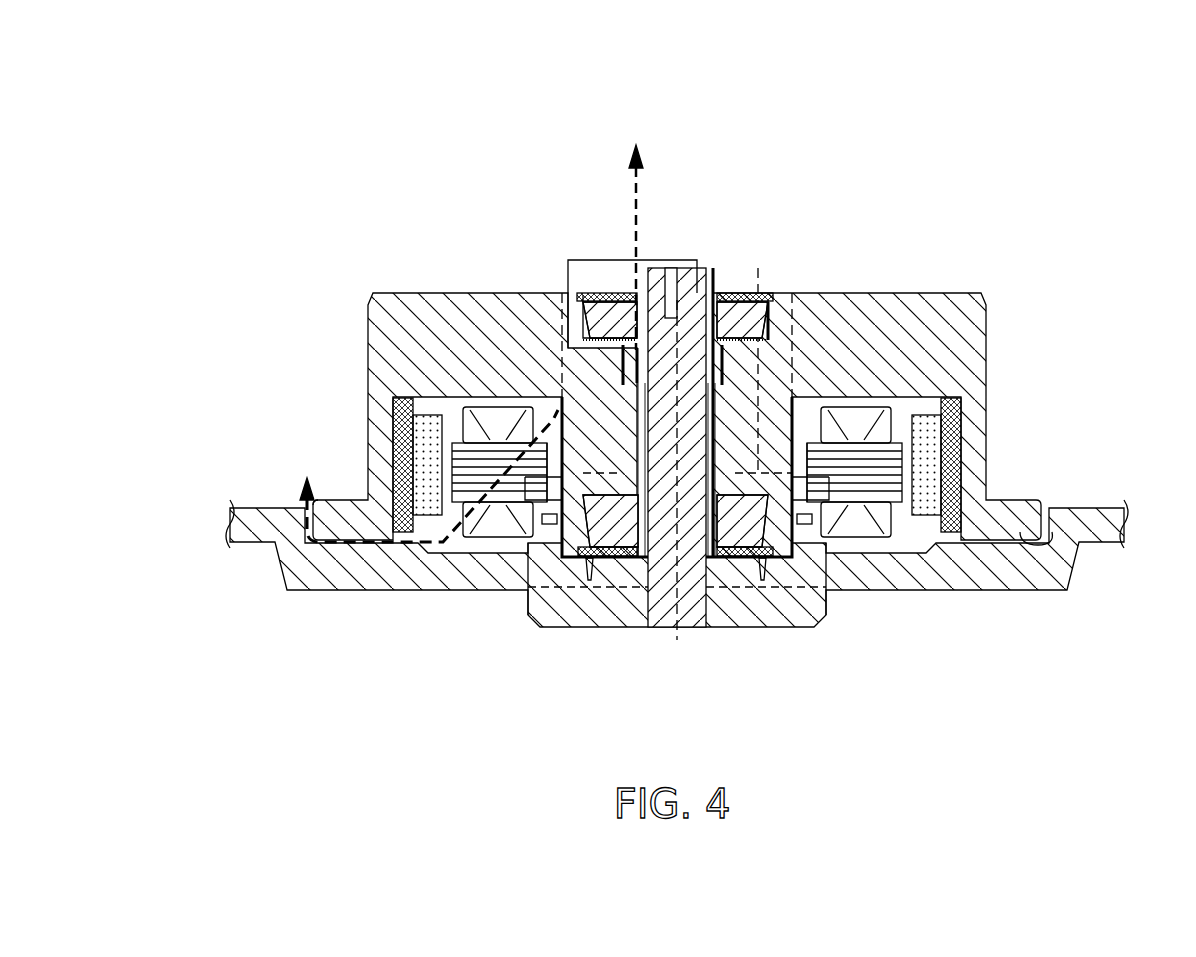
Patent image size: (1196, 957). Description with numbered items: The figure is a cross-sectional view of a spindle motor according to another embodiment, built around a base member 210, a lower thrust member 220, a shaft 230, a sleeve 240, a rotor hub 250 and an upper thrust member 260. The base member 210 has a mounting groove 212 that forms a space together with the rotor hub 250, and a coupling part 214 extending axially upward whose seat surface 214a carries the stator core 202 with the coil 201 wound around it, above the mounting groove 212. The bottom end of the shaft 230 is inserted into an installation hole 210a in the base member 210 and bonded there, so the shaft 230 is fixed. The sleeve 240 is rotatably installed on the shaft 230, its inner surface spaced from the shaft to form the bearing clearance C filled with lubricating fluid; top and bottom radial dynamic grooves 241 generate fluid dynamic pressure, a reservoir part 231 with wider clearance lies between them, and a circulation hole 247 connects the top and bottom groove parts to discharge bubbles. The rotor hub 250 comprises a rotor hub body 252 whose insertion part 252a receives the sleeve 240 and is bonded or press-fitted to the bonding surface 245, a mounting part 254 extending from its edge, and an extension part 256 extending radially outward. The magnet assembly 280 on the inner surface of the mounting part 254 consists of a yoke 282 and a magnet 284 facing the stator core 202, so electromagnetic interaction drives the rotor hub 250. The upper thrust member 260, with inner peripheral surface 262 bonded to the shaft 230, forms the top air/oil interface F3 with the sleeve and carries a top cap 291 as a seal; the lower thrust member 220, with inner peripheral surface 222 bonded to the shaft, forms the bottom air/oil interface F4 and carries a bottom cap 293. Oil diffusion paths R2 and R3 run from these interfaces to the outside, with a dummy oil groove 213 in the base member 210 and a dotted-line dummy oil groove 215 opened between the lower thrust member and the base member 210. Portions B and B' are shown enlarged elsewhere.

The coil 201 is at (480, 505).
The stator core 202 is at (422, 535).
The base member 210 is at (978, 578).
The installation hole 210a is at (718, 595).
The mounting groove 212 is at (1030, 548).
The dummy oil groove 213 is at (535, 525).
The coupling part 214 is at (858, 515).
The seat surface 214a is at (930, 515).
The dummy oil groove 215 is at (790, 562).
The lower thrust member 220 is at (762, 560).
The inner peripheral surface 222 is at (600, 558).
The shaft 230 is at (672, 600).
The reservoir part 231 is at (705, 293).
The sleeve 240 is at (545, 545).
The radial dynamic grooves 241 is at (835, 290).
The bonding surface 245 is at (880, 293).
The circulation hole 247 is at (898, 300).
The rotor hub 250 is at (232, 302).
The rotor hub body 252 is at (395, 316).
The insertion part 252a is at (790, 298).
The mounting part 254 is at (380, 402).
The extension part 256 is at (342, 512).
The upper thrust member 260 is at (598, 293).
The inner peripheral surface 262 is at (733, 293).
The magnet assembly 280 is at (1099, 405).
The yoke 282 is at (958, 465).
The magnet 284 is at (928, 441).
The top cap 291 is at (742, 300).
The bottom cap 293 is at (766, 565).
The oil diffusion path R2 is at (637, 231).
The oil diffusion path R3 is at (410, 476).
The portion B is at (561, 223).
The portion B' is at (507, 600).
The bearing clearance C is at (562, 352).
The top air/oil interface F3 is at (583, 360).
The bottom air/oil interface F4 is at (800, 520).